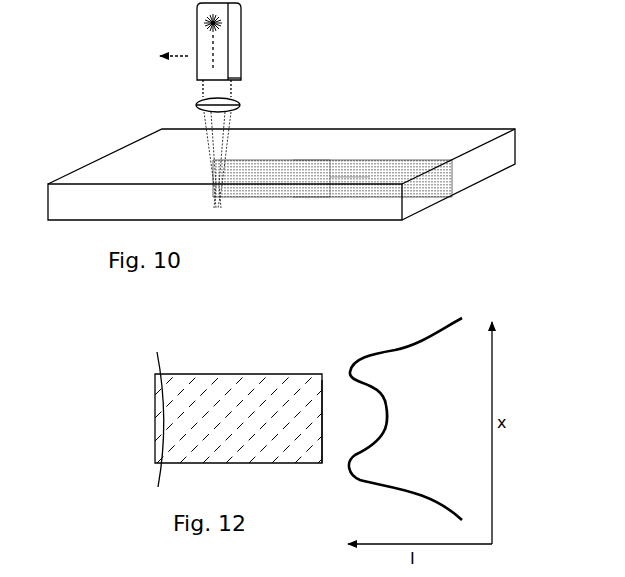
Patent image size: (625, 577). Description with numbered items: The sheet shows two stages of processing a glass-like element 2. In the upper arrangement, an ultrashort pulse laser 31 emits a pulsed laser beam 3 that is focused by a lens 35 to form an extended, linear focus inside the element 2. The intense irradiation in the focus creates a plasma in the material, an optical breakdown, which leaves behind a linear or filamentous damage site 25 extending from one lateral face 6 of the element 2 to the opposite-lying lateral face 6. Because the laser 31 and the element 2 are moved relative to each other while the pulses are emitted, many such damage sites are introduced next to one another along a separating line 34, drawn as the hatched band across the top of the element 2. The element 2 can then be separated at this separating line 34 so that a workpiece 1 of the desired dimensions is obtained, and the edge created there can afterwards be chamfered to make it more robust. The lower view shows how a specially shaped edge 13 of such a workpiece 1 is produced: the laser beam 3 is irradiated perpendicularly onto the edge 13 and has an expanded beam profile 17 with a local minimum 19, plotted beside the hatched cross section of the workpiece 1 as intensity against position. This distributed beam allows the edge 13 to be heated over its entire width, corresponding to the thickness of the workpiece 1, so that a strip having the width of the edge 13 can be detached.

In FIG. 10, the workpiece 1 is at (418, 212).
In FIG. 12, the workpiece 1 is at (273, 364).
In FIG. 10, the element 2 is at (434, 104).
In FIG. 10, the laser beam 3 is at (226, 128).
In FIG. 10, the lateral face 6 is at (358, 143).
In FIG. 12, the lateral face 6 is at (262, 464).
In FIG. 12, the edge 13 is at (322, 447).
In FIG. 12, the beam profile 17 is at (417, 345).
In FIG. 12, the local minimum 19 is at (387, 428).
In FIG. 10, the filamentous damage site 25 is at (348, 177).
In FIG. 10, the ultrashort pulse laser 31 is at (235, 40).
In FIG. 10, the separating line 34 is at (293, 160).
In FIG. 10, the lens 35 is at (193, 106).